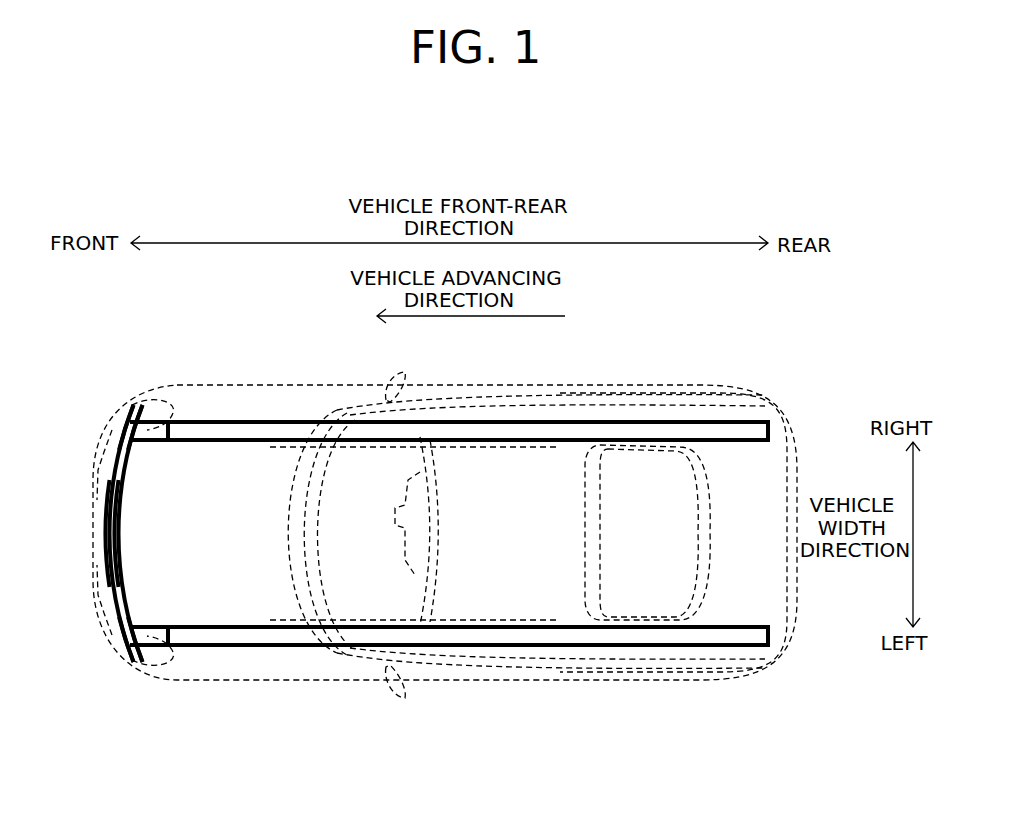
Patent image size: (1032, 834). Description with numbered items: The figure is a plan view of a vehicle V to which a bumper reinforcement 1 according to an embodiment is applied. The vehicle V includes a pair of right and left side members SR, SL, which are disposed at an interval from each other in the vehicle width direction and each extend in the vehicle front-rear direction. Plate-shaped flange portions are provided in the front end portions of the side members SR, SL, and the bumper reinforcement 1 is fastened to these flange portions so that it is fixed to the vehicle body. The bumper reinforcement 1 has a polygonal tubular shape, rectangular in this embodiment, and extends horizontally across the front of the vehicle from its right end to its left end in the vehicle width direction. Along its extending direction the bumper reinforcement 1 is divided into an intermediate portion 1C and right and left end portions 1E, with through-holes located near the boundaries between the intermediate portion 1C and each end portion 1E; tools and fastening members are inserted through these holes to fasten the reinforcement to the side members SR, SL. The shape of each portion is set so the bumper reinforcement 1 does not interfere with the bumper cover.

The bumper reinforcement 1 is at (98, 548).
The intermediate portion 1C is at (112, 505).
The end portion 1E is at (128, 421).
The right side member SR is at (245, 421).
The left side member SL is at (265, 646).
The vehicle V is at (642, 364).